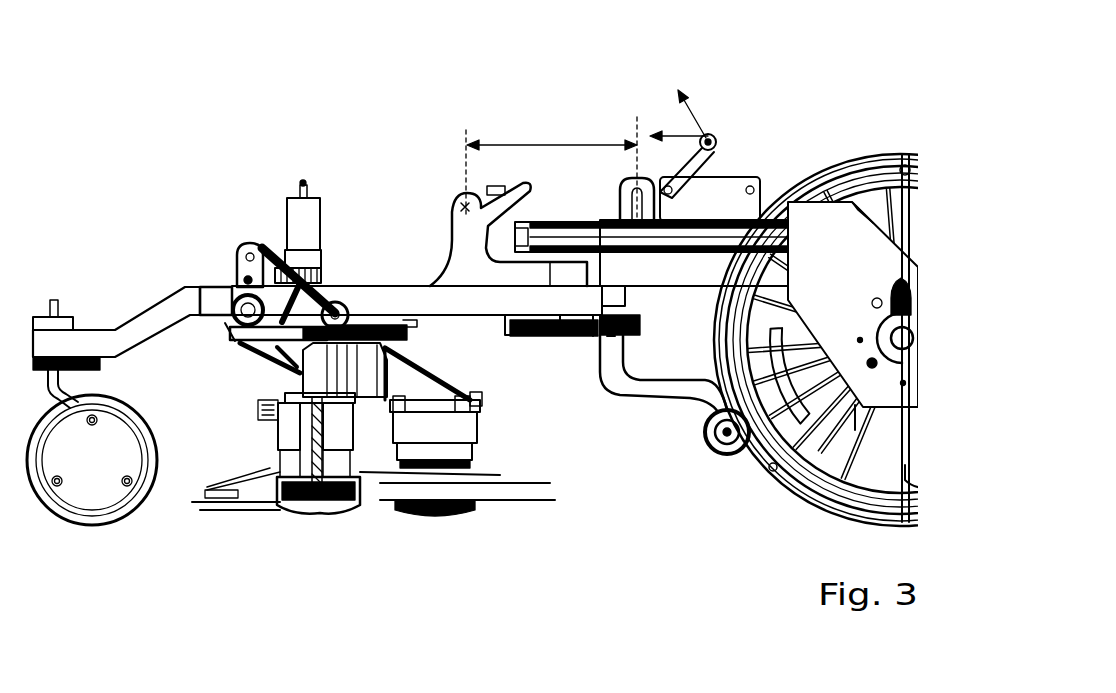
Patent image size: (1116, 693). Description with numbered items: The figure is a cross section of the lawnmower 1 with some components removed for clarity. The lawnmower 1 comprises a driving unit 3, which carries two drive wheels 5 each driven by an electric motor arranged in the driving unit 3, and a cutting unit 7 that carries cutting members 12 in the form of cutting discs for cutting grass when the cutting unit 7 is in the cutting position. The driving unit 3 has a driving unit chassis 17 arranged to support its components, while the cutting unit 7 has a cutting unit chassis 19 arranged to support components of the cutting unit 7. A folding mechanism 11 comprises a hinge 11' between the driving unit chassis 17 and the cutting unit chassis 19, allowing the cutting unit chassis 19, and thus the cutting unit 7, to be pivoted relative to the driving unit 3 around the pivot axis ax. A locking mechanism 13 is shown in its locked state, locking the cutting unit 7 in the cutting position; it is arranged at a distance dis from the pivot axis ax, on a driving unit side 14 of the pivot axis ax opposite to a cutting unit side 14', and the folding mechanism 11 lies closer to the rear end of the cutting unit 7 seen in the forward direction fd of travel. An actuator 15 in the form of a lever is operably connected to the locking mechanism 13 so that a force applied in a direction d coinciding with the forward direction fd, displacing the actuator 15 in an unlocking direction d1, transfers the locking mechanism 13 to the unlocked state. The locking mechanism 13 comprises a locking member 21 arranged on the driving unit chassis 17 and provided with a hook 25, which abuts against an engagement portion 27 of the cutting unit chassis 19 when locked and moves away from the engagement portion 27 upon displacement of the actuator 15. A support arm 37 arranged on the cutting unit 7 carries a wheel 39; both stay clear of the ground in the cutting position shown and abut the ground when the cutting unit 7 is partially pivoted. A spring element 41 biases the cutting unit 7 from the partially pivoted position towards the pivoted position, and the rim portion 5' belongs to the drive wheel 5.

The lawnmower 1 is at (172, 55).
The driving unit 3 is at (803, 75).
The drive wheel 5 is at (900, 309).
The rear wheel rim 5' is at (760, 497).
The cutting unit 7 is at (258, 145).
The folding mechanism 11 is at (502, 193).
The hinge 11' is at (421, 179).
The cutting member 12 is at (322, 515).
The locking mechanism 13 is at (637, 120).
The driving unit side 14 is at (696, 165).
The cutting unit side 14' is at (307, 190).
The actuator 15 is at (718, 142).
The driving unit chassis 17 is at (755, 218).
The cutting unit chassis 19 is at (353, 299).
The locking member 21 is at (618, 322).
The hook 25 is at (607, 337).
The engagement portion 27 is at (597, 330).
The support arm 37 is at (673, 388).
The wheel 39 is at (705, 450).
The spring element 41 is at (712, 282).
The pivot axis ax is at (458, 202).
The direction d is at (690, 136).
The unlocking direction d1 is at (698, 114).
The distance dis is at (538, 143).
The forward direction fd is at (118, 211).